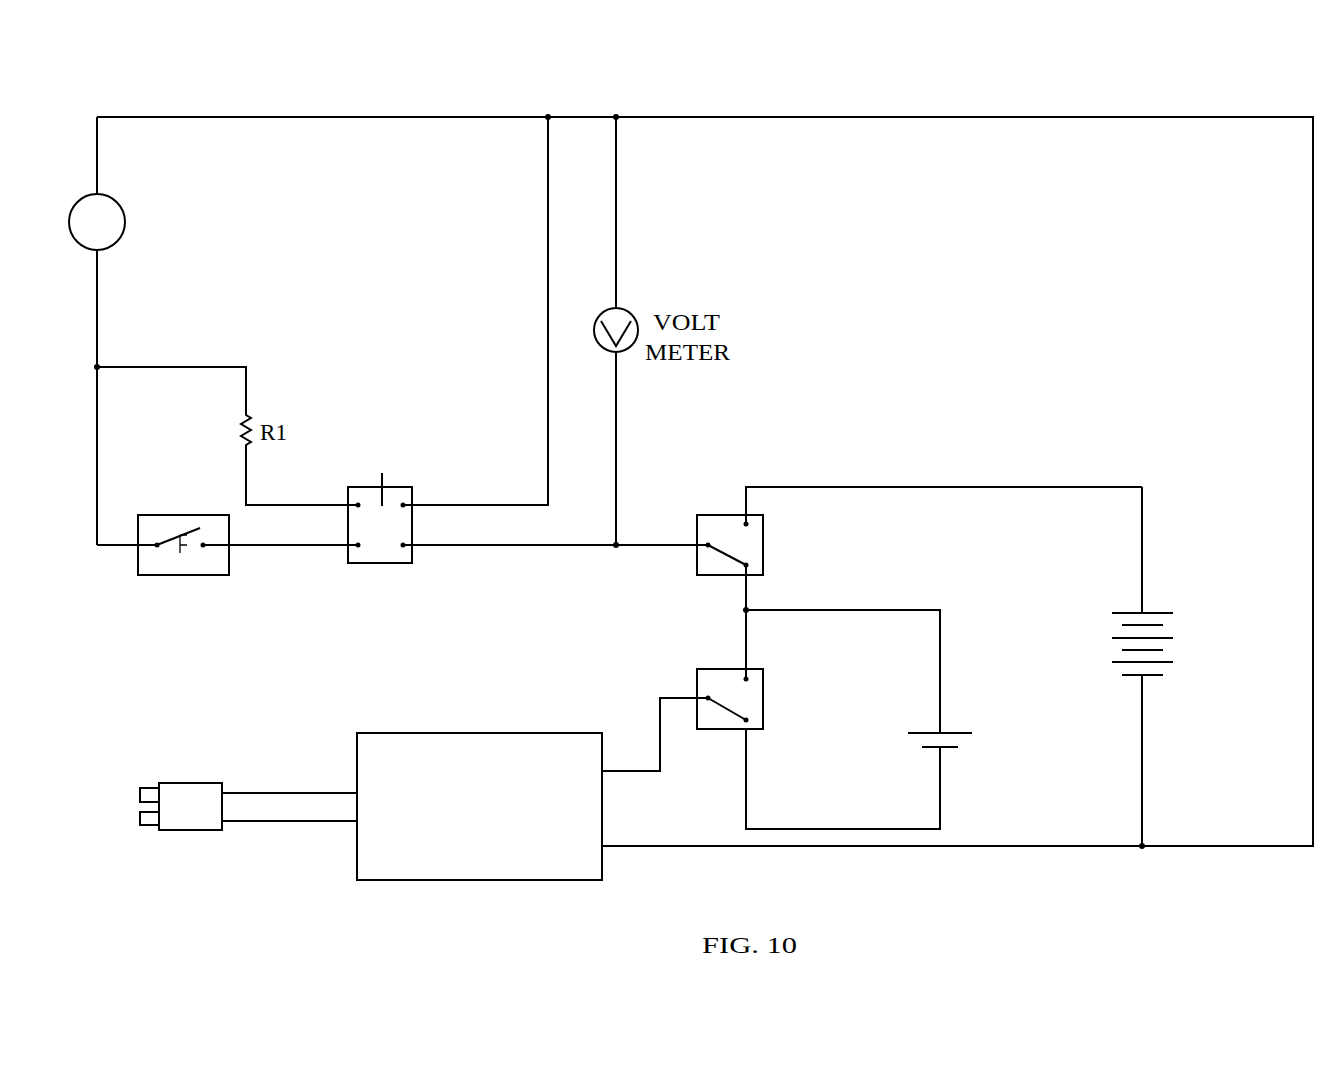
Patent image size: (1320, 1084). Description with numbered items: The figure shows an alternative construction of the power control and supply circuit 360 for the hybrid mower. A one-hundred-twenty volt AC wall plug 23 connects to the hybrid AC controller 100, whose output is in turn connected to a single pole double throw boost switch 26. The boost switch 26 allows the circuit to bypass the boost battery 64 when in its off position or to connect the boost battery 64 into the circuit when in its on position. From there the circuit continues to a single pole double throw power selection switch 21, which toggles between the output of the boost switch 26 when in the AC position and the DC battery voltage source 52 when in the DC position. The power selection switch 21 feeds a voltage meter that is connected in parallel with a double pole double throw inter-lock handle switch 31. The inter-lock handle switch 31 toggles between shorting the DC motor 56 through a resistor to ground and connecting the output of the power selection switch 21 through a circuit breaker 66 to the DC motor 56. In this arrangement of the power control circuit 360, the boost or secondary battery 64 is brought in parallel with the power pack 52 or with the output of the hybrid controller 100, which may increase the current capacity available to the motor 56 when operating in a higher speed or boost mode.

The power control and supply circuit 360 is at (1016, 98).
The DC motor 56 is at (127, 232).
The circuit breaker 66 is at (218, 563).
The inter-lock handle switch 31 is at (385, 555).
The power selection switch 21 is at (715, 520).
The boost switch 26 is at (727, 672).
The boost battery 64 is at (982, 725).
The DC battery voltage source 52 is at (1187, 628).
The hybrid AC controller 100 is at (482, 742).
The 120 VAC wall plug 23 is at (182, 822).